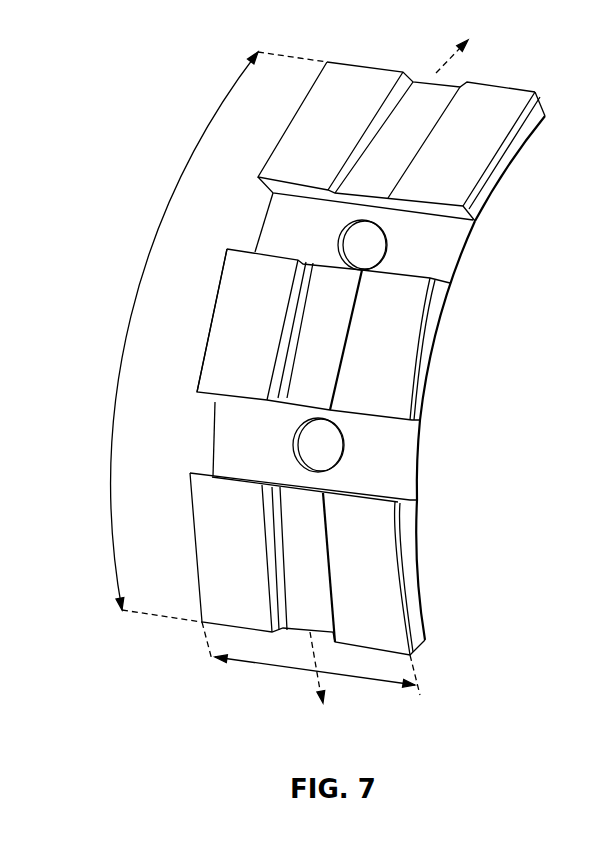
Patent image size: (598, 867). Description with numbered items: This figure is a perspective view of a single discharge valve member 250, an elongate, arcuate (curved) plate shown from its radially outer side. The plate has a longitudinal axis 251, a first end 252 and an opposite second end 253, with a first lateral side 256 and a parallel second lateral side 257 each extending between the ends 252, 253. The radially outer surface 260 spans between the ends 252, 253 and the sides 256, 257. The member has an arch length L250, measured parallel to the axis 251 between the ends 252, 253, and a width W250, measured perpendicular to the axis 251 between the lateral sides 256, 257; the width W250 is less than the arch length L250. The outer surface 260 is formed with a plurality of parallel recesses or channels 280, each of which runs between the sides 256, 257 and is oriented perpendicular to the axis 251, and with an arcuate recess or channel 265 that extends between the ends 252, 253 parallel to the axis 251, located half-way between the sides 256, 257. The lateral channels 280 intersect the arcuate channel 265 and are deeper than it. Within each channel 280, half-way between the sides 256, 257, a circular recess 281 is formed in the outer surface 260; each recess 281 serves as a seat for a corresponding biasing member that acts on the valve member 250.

The discharge valve member 250 is at (315, 137).
The longitudinal axis 251 is at (450, 60).
The first end 252 is at (510, 95).
The second end 253 is at (408, 605).
The first lateral side 256 is at (497, 175).
The second lateral side 257 is at (215, 292).
The radially outer surface 260 is at (314, 334).
The arcuate channel 265 is at (335, 315).
The channel 280 is at (458, 238).
The circular recess 281 is at (378, 238).
The arch length L250 is at (110, 430).
The width W250 is at (367, 683).